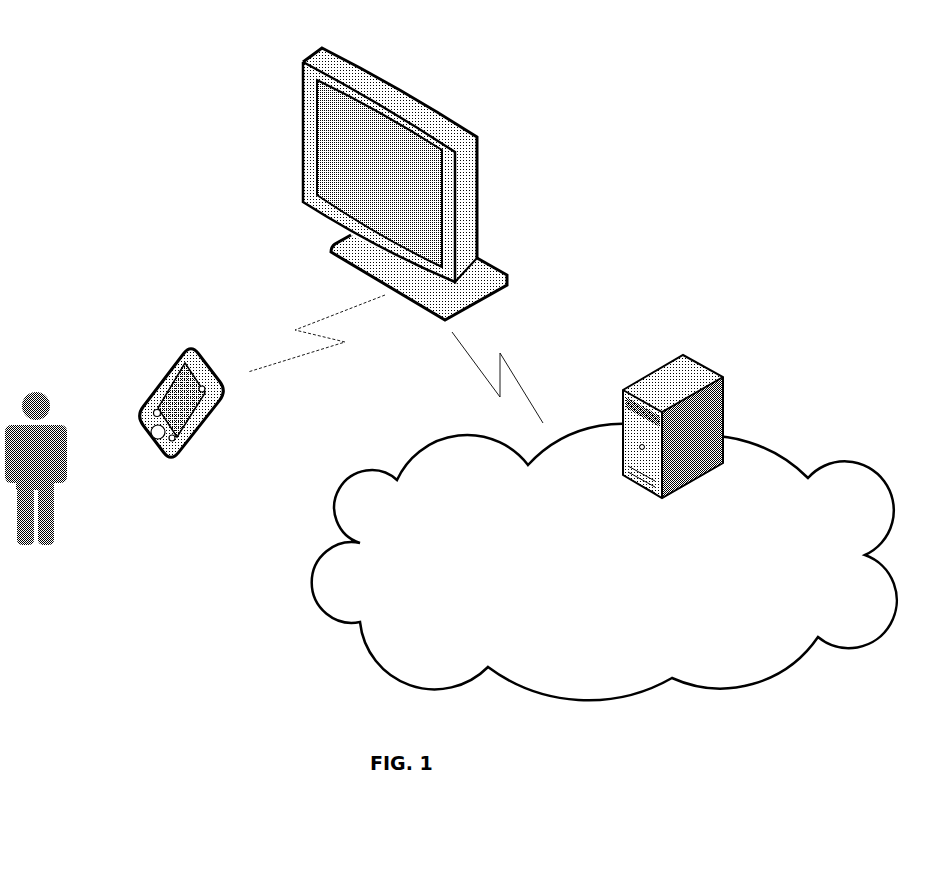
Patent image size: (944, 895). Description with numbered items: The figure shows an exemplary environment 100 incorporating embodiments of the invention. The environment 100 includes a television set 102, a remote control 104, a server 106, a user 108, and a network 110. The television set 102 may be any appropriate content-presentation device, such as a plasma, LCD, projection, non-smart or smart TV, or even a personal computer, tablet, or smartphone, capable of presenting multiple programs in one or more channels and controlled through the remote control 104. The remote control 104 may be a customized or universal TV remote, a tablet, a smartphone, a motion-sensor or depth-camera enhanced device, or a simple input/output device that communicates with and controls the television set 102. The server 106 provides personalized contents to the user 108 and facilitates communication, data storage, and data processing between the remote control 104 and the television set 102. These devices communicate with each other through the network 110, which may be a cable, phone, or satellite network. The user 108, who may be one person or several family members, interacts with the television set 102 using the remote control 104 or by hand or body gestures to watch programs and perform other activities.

The environment 100 is at (113, 53).
The television set 102 is at (478, 160).
The remote control 104 is at (205, 432).
The server 106 is at (717, 427).
The user 108 is at (55, 532).
The network 110 is at (435, 541).